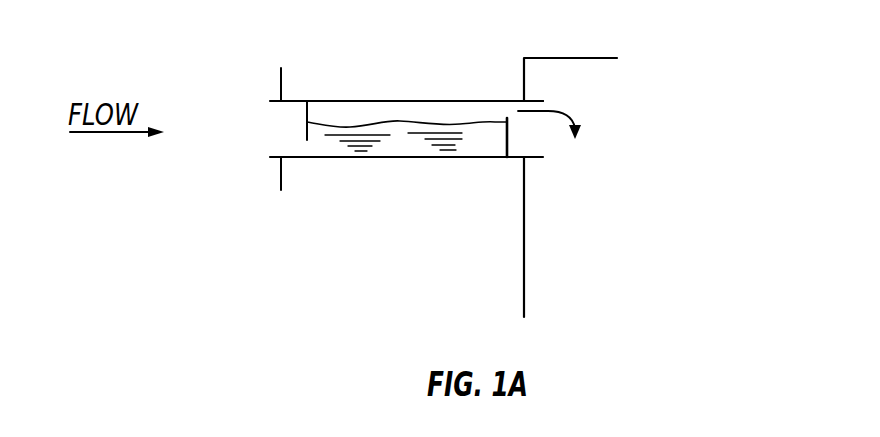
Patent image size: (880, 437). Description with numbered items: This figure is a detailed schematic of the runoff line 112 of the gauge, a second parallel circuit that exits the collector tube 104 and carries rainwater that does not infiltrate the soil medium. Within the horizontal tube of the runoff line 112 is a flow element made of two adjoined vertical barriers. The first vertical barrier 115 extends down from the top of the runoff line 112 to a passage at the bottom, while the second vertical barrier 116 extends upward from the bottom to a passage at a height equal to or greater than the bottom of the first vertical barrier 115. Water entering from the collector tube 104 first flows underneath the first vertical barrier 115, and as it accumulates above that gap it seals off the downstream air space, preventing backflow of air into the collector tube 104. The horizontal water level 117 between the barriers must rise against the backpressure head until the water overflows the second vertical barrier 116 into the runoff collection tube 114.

The collector tube 104 is at (281, 182).
The runoff line 112 is at (512, 100).
The runoff collection tube 114 is at (524, 245).
The first vertical barrier 115 is at (307, 112).
The second vertical barrier 116 is at (508, 135).
The water level 117 is at (491, 124).